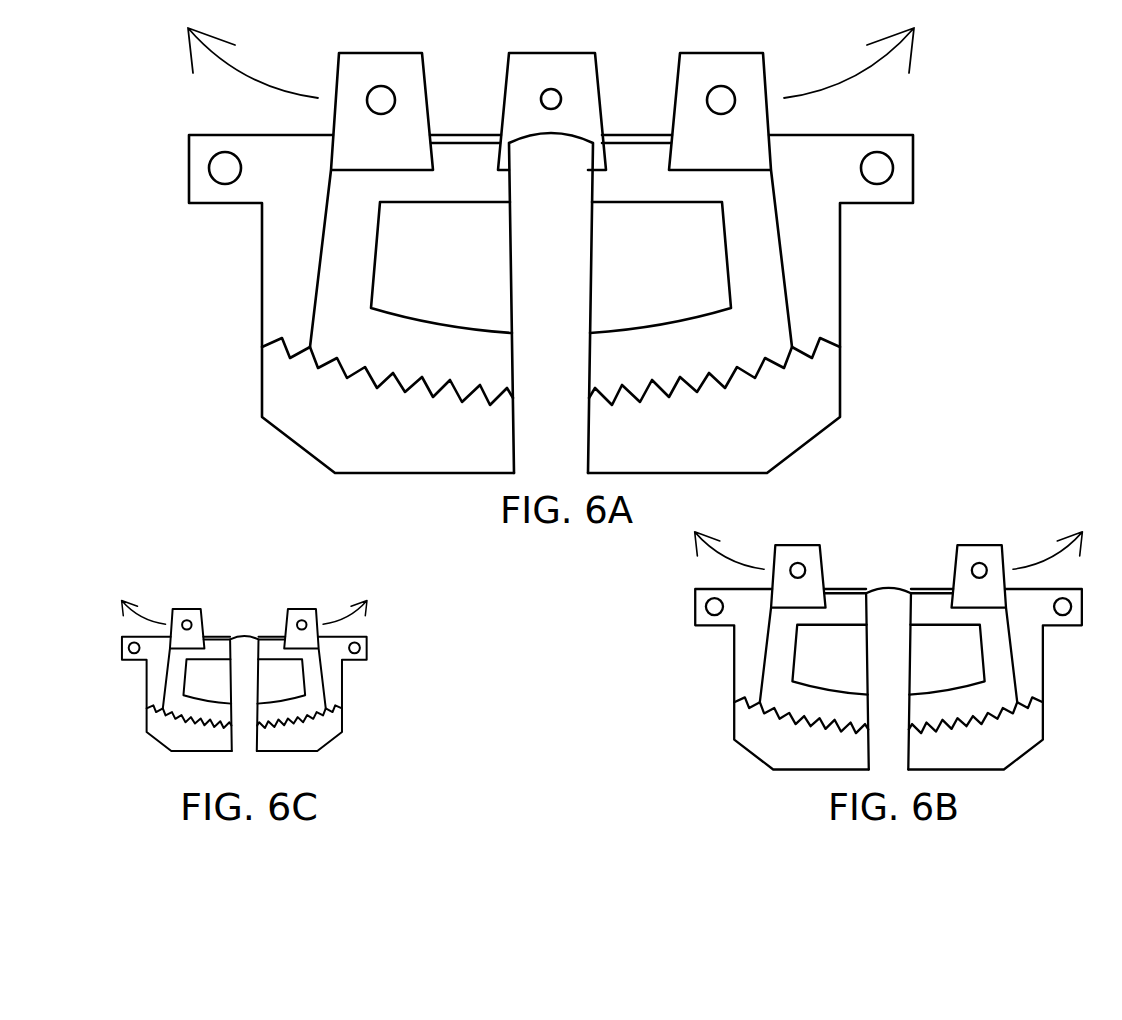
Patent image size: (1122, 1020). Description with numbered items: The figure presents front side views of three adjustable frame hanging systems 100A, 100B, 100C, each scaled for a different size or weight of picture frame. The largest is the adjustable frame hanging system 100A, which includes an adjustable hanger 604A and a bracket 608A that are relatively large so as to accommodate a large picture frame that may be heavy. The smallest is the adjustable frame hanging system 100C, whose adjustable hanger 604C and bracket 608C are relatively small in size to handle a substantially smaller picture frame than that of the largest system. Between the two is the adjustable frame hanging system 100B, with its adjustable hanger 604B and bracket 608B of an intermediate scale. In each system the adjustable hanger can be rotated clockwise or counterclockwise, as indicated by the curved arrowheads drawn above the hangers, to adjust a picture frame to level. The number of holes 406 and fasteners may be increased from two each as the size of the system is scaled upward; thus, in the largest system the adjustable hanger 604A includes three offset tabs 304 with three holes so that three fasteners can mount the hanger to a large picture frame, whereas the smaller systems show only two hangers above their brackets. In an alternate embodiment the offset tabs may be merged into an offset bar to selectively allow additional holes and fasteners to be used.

In FIG. 6A, the adjustable frame hanging system 100A is at (561, 249).
In FIG. 6B, the adjustable frame hanging system 100B is at (859, 581).
In FIG. 6C, the adjustable frame hanging system 100C is at (214, 612).
In FIG. 6A, the offset tabs 304 is at (585, 58).
In FIG. 6A, the holes 406 is at (226, 168).
In FIG. 6A, the adjustable hanger 604A is at (405, 110).
In FIG. 6B, the adjustable hanger 604B is at (823, 580).
In FIG. 6C, the adjustable hanger 604C is at (205, 621).
In FIG. 6A, the bracket 608A is at (262, 293).
In FIG. 6B, the bracket 608B is at (734, 663).
In FIG. 6C, the bracket 608C is at (148, 687).